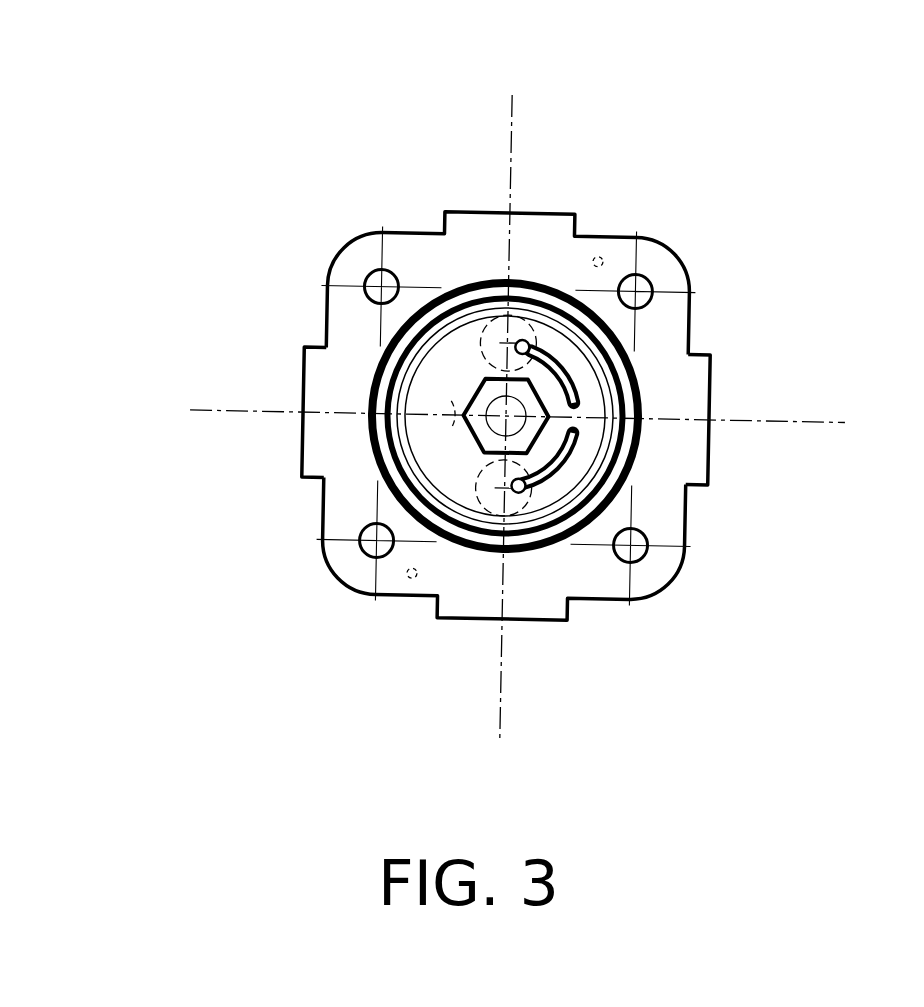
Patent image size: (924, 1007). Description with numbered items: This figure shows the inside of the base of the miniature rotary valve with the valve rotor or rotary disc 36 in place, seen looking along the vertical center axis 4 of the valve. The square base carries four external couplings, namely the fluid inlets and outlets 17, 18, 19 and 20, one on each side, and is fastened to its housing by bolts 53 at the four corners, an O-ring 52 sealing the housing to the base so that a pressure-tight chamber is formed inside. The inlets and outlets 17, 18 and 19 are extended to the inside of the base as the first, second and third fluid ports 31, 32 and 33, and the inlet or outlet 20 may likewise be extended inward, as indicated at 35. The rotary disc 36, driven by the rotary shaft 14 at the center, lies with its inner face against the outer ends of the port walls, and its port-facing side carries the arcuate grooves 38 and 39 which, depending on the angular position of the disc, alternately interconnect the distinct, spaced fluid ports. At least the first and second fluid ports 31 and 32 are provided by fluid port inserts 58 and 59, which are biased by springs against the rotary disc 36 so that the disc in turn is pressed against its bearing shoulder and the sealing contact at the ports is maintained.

The vertical axis 4 is at (581, 391).
The rotary shaft 14 is at (346, 620).
The fluid inlet or outlet 17 is at (524, 658).
The fluid inlet or outlet 18 is at (508, 211).
The fluid inlet or outlet 19 is at (787, 411).
The fluid inlet or outlet 20 is at (239, 384).
The first fluid port 31 is at (420, 620).
The second fluid port 32 is at (574, 233).
The third fluid port 33 is at (538, 347).
The fluid port 35 is at (348, 459).
The rotary disc 36 is at (707, 493).
The arcuate groove 38 is at (674, 219).
The arcuate groove 39 is at (631, 464).
The O-ring 52 is at (790, 369).
The bolts 53 is at (524, 393).
The fluid port insert 58 is at (401, 336).
The fluid port insert 59 is at (542, 478).